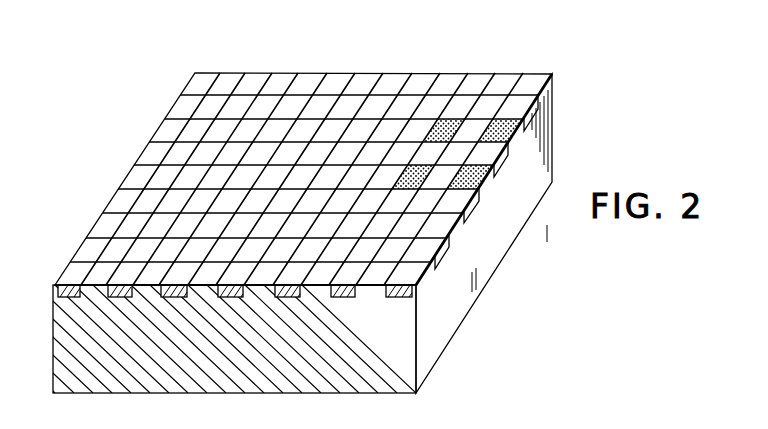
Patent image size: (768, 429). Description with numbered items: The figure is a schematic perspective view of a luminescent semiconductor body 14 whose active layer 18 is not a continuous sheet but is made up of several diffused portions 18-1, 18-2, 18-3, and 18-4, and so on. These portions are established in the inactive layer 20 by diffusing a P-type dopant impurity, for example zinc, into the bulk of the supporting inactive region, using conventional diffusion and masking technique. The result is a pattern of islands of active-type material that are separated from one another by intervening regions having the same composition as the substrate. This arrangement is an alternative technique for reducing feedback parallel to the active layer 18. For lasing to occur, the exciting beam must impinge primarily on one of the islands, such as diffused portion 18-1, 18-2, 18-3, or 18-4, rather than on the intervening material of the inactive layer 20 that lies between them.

The semiconductor body 14 is at (123, 122).
The active layer 18 is at (103, 258).
The diffused portion 18-1 is at (448, 130).
The diffused portion 18-2 is at (503, 130).
The diffused portion 18-3 is at (417, 179).
The diffused portion 18-4 is at (477, 183).
The inactive layer 20 is at (475, 262).